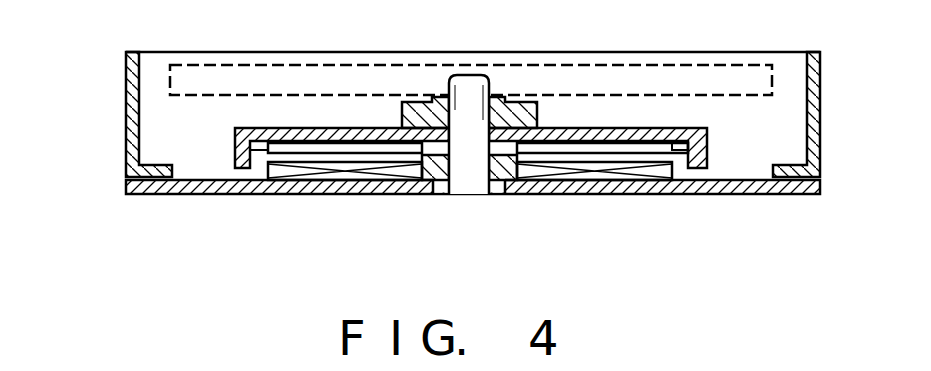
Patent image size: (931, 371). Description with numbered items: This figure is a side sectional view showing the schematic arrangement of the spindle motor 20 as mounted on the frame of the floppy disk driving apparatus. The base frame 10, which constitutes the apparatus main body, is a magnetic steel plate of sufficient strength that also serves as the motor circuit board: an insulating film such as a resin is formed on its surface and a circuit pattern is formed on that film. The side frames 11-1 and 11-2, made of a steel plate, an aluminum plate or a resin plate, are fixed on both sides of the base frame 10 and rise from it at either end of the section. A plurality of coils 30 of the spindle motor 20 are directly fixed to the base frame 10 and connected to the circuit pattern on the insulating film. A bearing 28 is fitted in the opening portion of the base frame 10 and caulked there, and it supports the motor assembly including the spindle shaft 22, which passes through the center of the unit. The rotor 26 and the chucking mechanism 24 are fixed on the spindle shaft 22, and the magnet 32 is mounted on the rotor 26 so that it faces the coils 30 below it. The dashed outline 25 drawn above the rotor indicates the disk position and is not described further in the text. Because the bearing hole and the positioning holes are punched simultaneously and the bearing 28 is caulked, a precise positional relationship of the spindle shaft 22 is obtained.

The base frame 10 is at (287, 197).
The side frame 11-1 is at (817, 128).
The side frame 11-2 is at (127, 133).
The spindle motor 20 is at (227, 137).
The spindle shaft 22 is at (473, 181).
The chucking mechanism 24 is at (425, 113).
The disk (phantom) 25 is at (630, 83).
The rotor 26 is at (703, 148).
The bearing 28 is at (443, 181).
The coils 30 is at (614, 179).
The magnet 32 is at (672, 164).